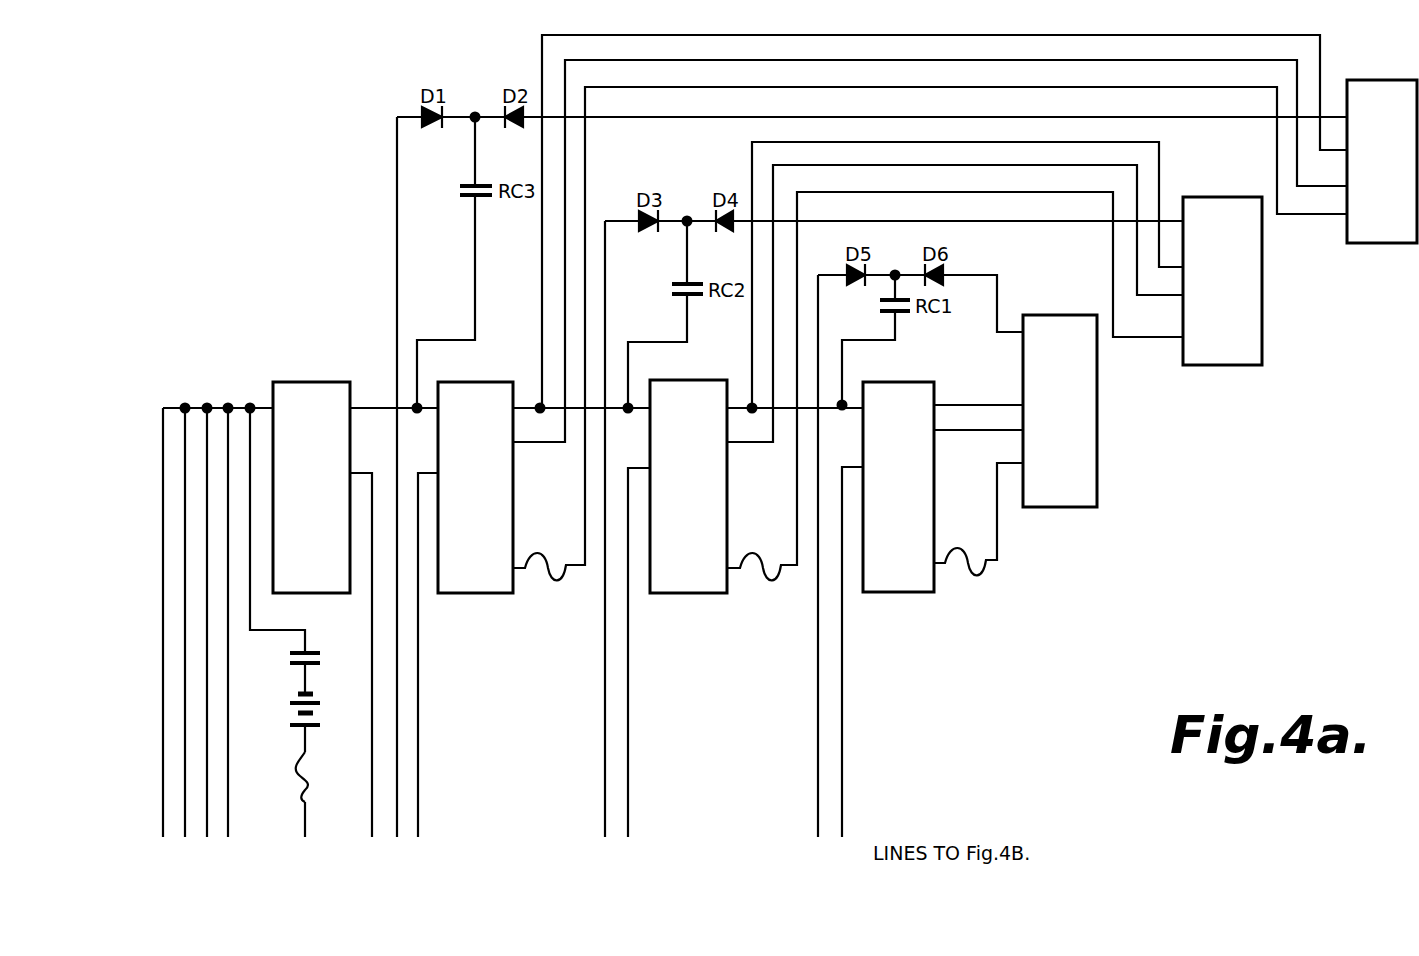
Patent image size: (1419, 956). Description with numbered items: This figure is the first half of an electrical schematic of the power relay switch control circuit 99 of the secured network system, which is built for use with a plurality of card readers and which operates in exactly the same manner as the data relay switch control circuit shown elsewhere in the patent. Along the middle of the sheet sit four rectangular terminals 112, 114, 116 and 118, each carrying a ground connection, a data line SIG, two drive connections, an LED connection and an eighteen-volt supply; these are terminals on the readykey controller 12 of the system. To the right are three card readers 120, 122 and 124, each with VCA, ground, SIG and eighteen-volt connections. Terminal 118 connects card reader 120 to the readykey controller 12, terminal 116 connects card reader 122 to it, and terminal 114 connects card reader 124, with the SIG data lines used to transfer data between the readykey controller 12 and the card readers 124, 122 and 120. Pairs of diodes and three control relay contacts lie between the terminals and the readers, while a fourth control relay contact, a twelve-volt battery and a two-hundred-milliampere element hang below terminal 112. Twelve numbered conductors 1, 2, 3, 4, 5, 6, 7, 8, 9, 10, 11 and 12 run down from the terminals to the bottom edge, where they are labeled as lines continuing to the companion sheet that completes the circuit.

The power relay switch control circuit 99 is at (332, 127).
The terminal 112 is at (300, 593).
The terminal 114 is at (468, 593).
The terminal 116 is at (680, 593).
The terminal 118 is at (890, 592).
The card reader 120 is at (1042, 507).
The card reader 122 is at (1200, 365).
The card reader 124 is at (1396, 280).
The line 1 to Fig. 4B 1 is at (163, 636).
The line 2 to Fig. 4B 2 is at (184, 636).
The line 3 to Fig. 4B 3 is at (206, 636).
The line 4 to Fig. 4B 4 is at (228, 636).
The line 5 to Fig. 4B (12 VDC supply) 5 is at (301, 636).
The line 6 to Fig. 4B 6 is at (364, 668).
The line 7 to Fig. 4B 7 is at (396, 490).
The line 8 to Fig. 4B 8 is at (424, 668).
The line 9 to Fig. 4B 9 is at (605, 542).
The line 10 to Fig. 4B 10 is at (636, 666).
The line 11 to Fig. 4B 11 is at (824, 569).
The line 12 to Fig. 4B 12 is at (850, 665).